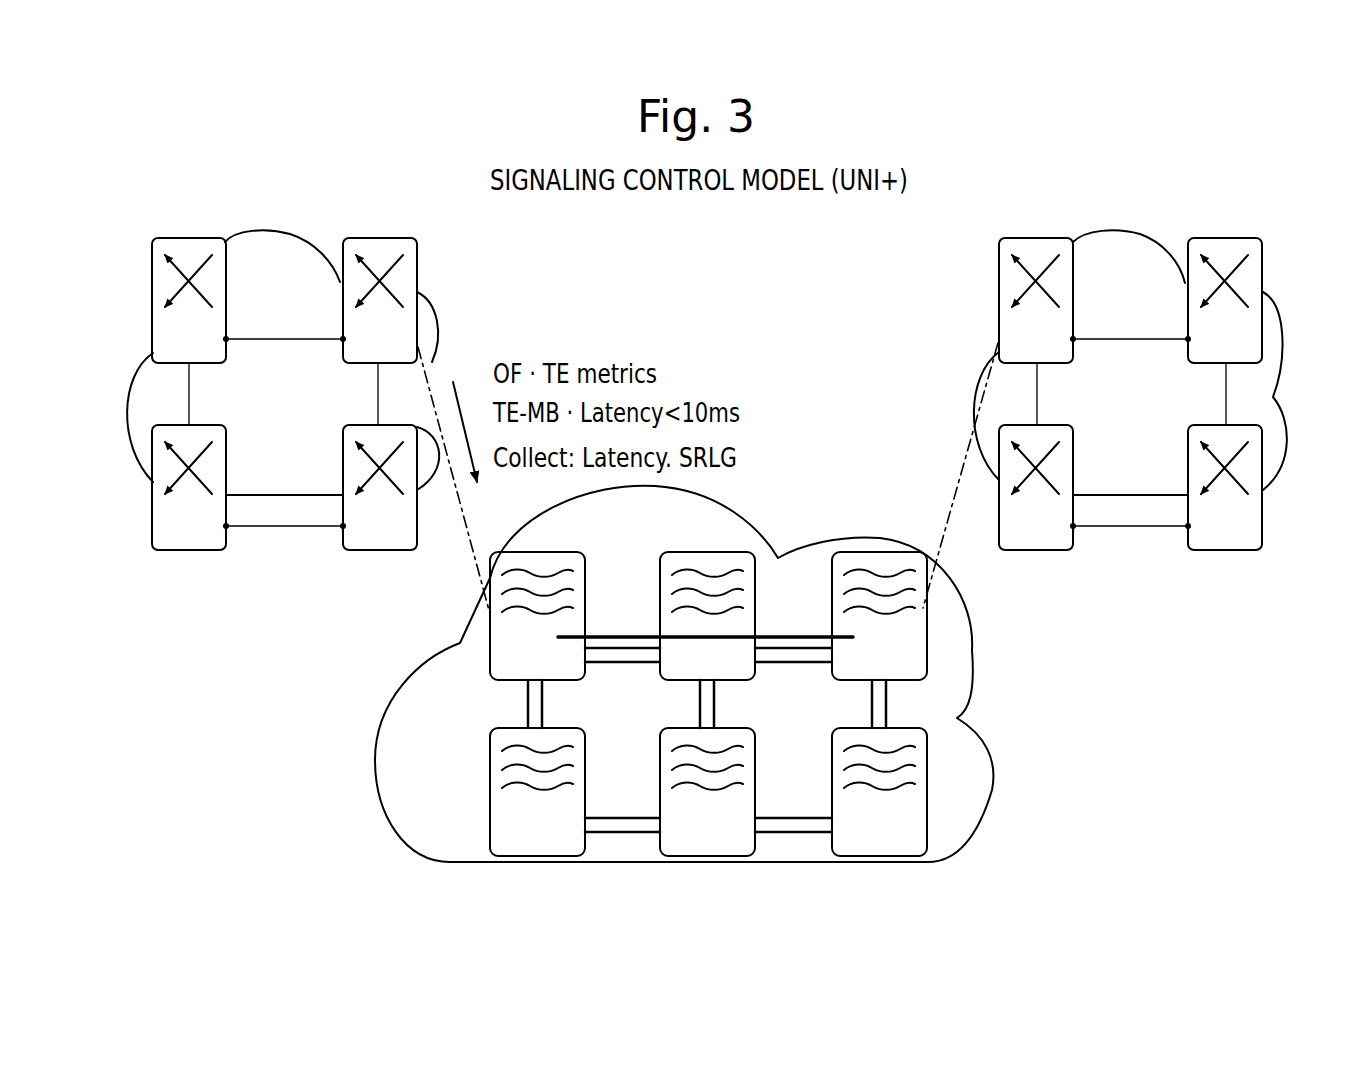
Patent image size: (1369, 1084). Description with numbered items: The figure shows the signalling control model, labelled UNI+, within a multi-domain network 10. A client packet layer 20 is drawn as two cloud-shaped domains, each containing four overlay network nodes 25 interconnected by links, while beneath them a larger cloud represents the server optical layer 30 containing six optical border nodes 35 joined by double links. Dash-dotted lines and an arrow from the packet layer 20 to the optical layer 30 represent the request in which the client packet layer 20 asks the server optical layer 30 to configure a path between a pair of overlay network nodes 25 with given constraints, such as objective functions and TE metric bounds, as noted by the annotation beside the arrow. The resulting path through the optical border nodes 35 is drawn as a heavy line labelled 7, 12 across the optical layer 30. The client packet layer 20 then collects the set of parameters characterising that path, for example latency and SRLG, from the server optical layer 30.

The multi-domain network 10 is at (252, 682).
The client packet layer 20 is at (118, 385).
The overlay network node 25 is at (173, 238).
The server optical layer 30 is at (987, 752).
The optical border node 35 is at (560, 552).
The connection / path segment 7 is at (656, 619).
The connection / path segment 12 is at (804, 618).